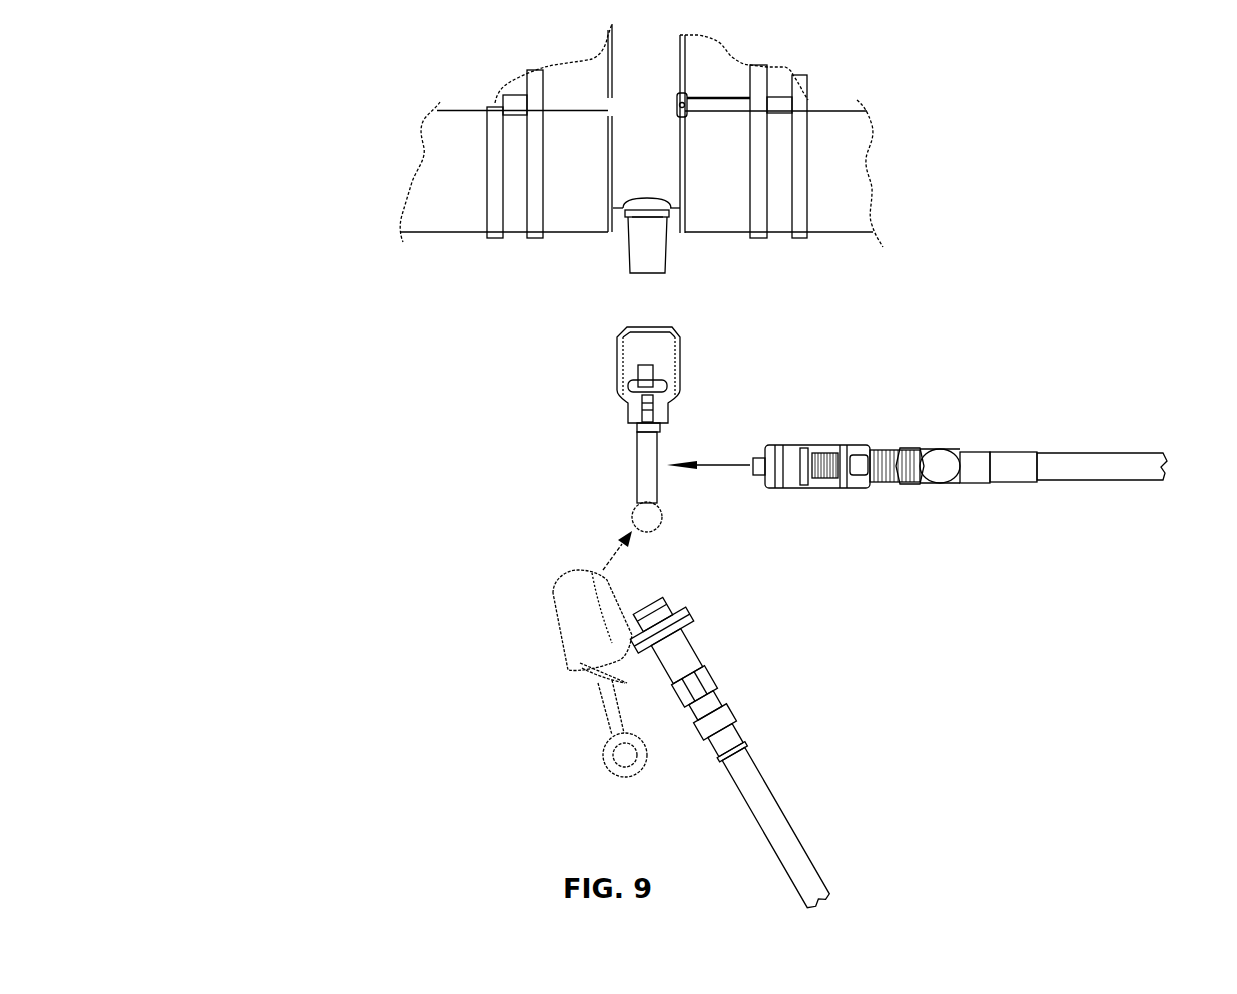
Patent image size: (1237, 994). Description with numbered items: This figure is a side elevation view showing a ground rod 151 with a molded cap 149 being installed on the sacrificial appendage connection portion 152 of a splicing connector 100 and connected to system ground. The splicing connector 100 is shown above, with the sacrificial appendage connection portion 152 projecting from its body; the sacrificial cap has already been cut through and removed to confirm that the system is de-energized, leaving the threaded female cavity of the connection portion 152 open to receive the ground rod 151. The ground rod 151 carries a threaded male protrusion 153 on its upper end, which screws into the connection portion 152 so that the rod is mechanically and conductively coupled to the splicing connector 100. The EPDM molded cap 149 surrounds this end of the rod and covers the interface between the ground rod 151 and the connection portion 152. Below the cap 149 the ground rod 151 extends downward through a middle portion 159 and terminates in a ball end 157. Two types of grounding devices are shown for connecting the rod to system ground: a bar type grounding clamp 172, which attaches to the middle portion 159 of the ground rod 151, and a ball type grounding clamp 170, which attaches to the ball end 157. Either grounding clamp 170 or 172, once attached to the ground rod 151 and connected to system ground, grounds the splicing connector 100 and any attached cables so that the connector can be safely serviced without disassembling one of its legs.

The splicing connector 100 is at (392, 130).
The sacrificial appendage connection portion 152 is at (640, 245).
The ground rod 151 is at (648, 444).
The molded cap 149 is at (658, 371).
The threaded male protrusion 153 is at (643, 372).
The middle portion 159 is at (647, 465).
The ball end 157 is at (647, 517).
The bar type grounding clamp 172 is at (1085, 467).
The ball type grounding clamp 170 is at (768, 810).